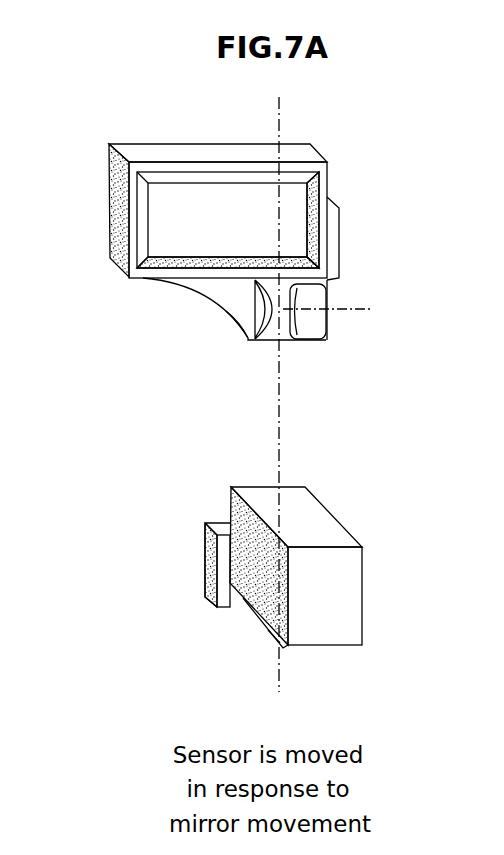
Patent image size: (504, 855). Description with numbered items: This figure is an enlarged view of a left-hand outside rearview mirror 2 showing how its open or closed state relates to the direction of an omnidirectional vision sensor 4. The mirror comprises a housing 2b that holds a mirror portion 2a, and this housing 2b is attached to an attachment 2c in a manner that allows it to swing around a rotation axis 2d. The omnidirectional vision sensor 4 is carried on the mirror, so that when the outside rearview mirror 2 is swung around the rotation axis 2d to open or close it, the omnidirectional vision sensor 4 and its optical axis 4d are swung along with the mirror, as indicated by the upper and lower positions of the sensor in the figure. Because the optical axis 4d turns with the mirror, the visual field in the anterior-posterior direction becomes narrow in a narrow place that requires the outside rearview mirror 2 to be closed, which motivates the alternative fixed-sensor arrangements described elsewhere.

The outside rearview mirror 2 is at (205, 130).
The mirror portion 2a is at (297, 189).
The housing 2b is at (318, 520).
The attachment 2c is at (355, 257).
The rotation axis 2d is at (263, 410).
The omnidirectional vision sensor 4 is at (305, 342).
The optical axis 4d is at (354, 313).